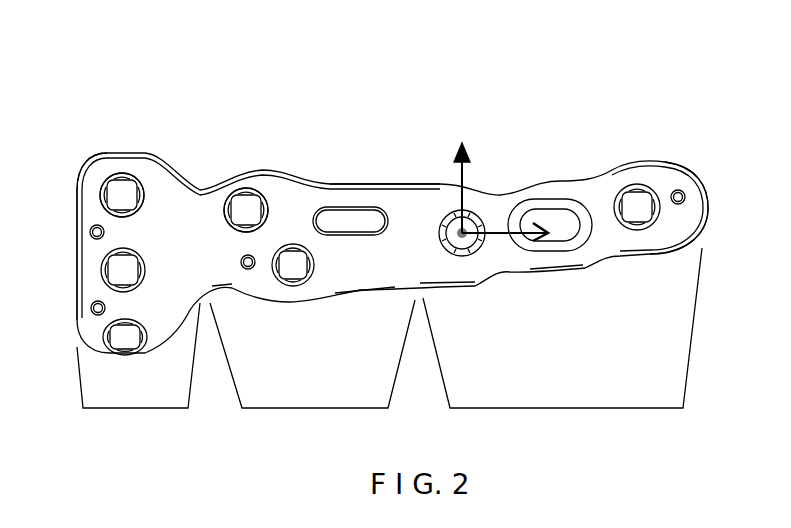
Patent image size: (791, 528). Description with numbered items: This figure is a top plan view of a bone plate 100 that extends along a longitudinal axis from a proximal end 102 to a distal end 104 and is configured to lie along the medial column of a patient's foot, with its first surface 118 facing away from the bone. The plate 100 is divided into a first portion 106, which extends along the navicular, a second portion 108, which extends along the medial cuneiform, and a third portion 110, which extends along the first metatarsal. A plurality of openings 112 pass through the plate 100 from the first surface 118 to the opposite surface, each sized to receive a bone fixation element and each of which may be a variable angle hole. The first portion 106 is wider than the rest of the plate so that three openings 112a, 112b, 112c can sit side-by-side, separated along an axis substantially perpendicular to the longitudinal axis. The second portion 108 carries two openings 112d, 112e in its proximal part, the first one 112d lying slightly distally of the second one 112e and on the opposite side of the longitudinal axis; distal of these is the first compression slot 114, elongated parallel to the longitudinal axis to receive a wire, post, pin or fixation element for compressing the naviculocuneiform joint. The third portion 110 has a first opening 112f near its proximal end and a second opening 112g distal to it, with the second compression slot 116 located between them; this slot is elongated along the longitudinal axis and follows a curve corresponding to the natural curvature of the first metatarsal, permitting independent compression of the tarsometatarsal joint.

The bone plate 100 is at (255, 112).
The proximal end 102 is at (72, 222).
The distal end 104 is at (703, 185).
The first portion 106 is at (138, 368).
The second portion 108 is at (312, 367).
The third portion 110 is at (562, 341).
The openings 112 is at (138, 175).
The opening 112a is at (138, 342).
The opening 112b is at (123, 262).
The opening 112c is at (118, 183).
The first opening of second portion 112d is at (283, 277).
The second opening of second portion 112e is at (268, 198).
The first opening of third portion 112f is at (447, 210).
The second opening of third portion 112g is at (635, 197).
The first compression slot 114 is at (353, 207).
The second compression slot 116 is at (545, 205).
The first surface 118 is at (410, 203).